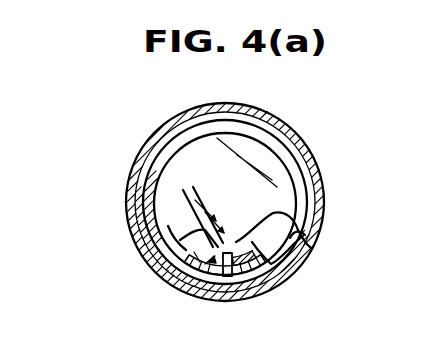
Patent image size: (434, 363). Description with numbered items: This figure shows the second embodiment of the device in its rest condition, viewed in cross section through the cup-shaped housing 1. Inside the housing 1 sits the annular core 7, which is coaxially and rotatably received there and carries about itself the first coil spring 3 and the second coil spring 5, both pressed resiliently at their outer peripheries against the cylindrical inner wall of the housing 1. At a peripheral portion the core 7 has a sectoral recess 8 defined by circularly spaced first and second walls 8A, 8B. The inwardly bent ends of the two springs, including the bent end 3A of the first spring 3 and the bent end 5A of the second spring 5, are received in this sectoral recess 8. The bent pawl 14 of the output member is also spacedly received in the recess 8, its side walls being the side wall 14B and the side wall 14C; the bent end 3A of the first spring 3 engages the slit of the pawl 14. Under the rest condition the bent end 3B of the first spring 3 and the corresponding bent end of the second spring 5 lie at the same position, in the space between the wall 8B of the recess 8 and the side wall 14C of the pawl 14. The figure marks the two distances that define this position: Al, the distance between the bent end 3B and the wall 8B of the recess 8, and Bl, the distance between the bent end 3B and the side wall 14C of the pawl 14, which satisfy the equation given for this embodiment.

The cup-shaped housing 1 is at (277, 116).
The annular core 7 is at (272, 162).
The first coil spring 3 is at (133, 213).
The bent end of first spring 3A is at (216, 290).
The bent end of first spring 3B is at (150, 267).
The second coil spring 5 is at (297, 240).
The bent end of second spring 5A is at (290, 270).
The sectoral recess 8 is at (190, 293).
The first wall of recess 8A is at (280, 224).
The second wall of recess 8B is at (140, 235).
The bent pawl 14 is at (246, 297).
The side wall of pawl 14B is at (261, 281).
The side wall of pawl 14C is at (176, 290).
The distance between bent end and recess wall Al is at (201, 210).
The distance between bent end and pawl side wall Bl is at (214, 220).